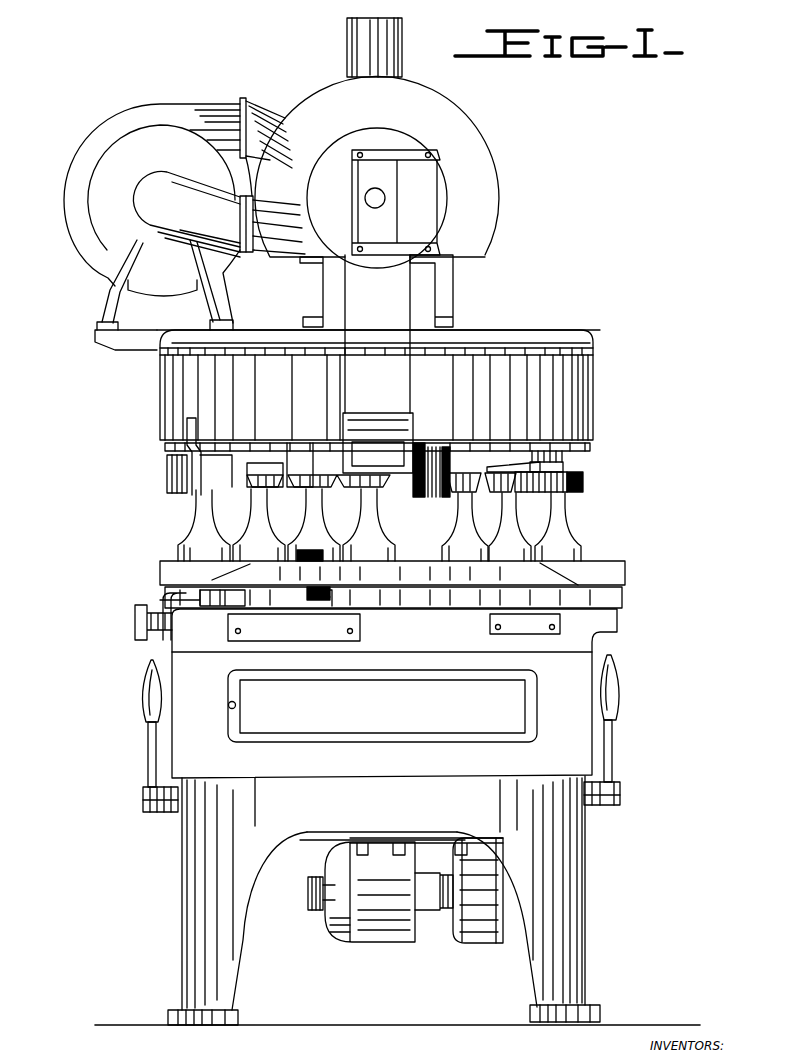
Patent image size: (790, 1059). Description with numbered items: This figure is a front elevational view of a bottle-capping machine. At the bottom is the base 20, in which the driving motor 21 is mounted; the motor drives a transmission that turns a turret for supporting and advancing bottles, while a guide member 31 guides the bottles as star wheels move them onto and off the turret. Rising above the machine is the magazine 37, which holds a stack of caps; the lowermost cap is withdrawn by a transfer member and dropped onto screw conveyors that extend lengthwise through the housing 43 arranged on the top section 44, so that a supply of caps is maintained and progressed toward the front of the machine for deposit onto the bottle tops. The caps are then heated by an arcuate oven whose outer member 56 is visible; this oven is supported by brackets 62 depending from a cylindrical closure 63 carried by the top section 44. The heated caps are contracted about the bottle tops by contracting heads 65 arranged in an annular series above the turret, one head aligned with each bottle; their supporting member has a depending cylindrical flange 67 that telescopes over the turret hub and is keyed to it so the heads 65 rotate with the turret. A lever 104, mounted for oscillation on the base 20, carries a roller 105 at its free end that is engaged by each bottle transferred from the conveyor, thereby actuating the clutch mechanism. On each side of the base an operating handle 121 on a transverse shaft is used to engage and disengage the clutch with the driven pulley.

The base 20 is at (182, 880).
The driving motor 21 is at (380, 940).
The guide member 31 is at (600, 562).
The magazine 37 is at (347, 44).
The housing 43 is at (487, 161).
The top section 44 is at (470, 340).
The outer member 56 is at (167, 478).
The brackets 62 is at (187, 432).
The cylindrical closure 63 is at (593, 390).
The contracting heads 65 is at (264, 443).
The depending cylindrical flange 67 is at (445, 462).
The lever 104 is at (298, 609).
The roller 105 is at (327, 609).
The operating handle 121 is at (143, 695).